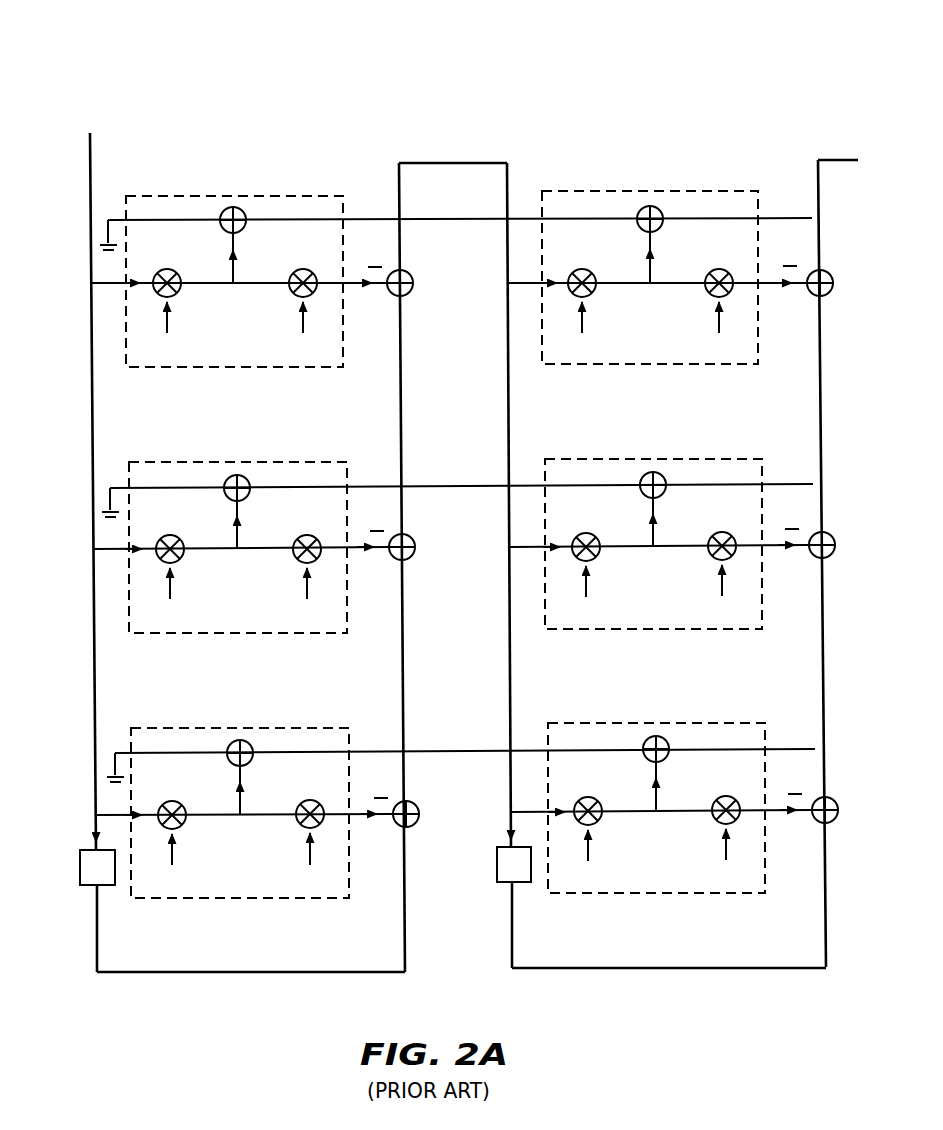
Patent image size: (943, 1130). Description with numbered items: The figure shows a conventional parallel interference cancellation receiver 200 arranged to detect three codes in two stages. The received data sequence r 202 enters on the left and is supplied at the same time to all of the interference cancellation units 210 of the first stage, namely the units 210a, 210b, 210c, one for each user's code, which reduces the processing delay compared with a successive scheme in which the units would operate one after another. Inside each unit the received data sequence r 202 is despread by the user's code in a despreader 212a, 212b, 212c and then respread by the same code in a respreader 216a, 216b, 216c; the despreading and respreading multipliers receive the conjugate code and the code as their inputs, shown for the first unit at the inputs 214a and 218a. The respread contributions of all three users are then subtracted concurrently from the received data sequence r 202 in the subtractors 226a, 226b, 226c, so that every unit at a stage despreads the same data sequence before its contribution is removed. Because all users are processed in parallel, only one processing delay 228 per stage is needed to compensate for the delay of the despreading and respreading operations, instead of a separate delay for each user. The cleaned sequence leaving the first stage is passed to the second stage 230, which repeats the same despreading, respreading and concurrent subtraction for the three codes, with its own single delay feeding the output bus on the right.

The parallel interference cancellation receiver 200 is at (678, 79).
The received data sequence r 202 is at (88, 191).
The interference cancellation units 210 is at (212, 138).
The interference cancellation unit 210a is at (173, 195).
The interference cancellation unit 210b is at (177, 462).
The interference cancellation unit 210c is at (181, 728).
The despreader 212a is at (167, 269).
The despreader 212b is at (162, 537).
The despreader 212c is at (163, 802).
The conjugate weight input S*1 214a is at (192, 340).
The respreader 216a is at (303, 269).
The respreader 216b is at (313, 537).
The respreader 216c is at (319, 802).
The weight input S1 218a is at (307, 343).
The subtractor 226a is at (410, 291).
The subtractor 226b is at (412, 557).
The subtractor 226c is at (411, 827).
The processing delay 228 is at (80, 870).
The second column of processing stages 230 is at (639, 176).